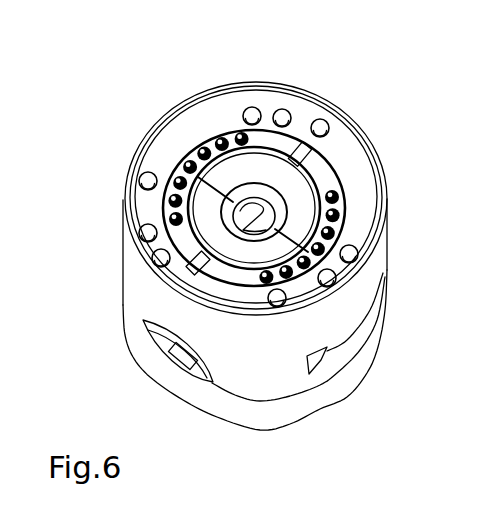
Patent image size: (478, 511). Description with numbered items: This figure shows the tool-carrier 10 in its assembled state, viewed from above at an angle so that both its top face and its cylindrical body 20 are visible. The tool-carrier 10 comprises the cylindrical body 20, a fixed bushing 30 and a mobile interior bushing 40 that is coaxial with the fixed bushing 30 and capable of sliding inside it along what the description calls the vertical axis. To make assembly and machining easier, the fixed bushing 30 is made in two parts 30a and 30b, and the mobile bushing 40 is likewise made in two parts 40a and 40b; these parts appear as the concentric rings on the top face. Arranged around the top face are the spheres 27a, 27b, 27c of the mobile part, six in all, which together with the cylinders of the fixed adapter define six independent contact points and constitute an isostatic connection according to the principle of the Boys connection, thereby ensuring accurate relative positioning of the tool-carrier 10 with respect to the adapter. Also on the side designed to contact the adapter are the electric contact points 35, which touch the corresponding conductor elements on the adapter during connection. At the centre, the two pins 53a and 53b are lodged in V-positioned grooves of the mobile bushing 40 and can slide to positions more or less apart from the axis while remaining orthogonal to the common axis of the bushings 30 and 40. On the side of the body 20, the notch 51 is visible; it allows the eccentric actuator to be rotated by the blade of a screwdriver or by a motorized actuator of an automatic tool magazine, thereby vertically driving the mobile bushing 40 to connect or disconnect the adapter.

The tool-carrier 10 is at (374, 395).
The cylindrical body 20 is at (137, 291).
The sphere 27a is at (326, 280).
The sphere 27b is at (282, 112).
The sphere 27c is at (160, 258).
The fixed bushing 30 is at (335, 218).
The part of fixed bushing 30a is at (340, 172).
The part of fixed bushing 30b is at (195, 257).
The electric contact points 35 is at (171, 214).
The mobile interior bushing 40 is at (392, 323).
The part of mobile bushing 40a is at (167, 172).
The part of mobile bushing 40b is at (327, 179).
The notch 51 is at (196, 376).
The pin 53a is at (261, 212).
The pin 53b is at (243, 210).